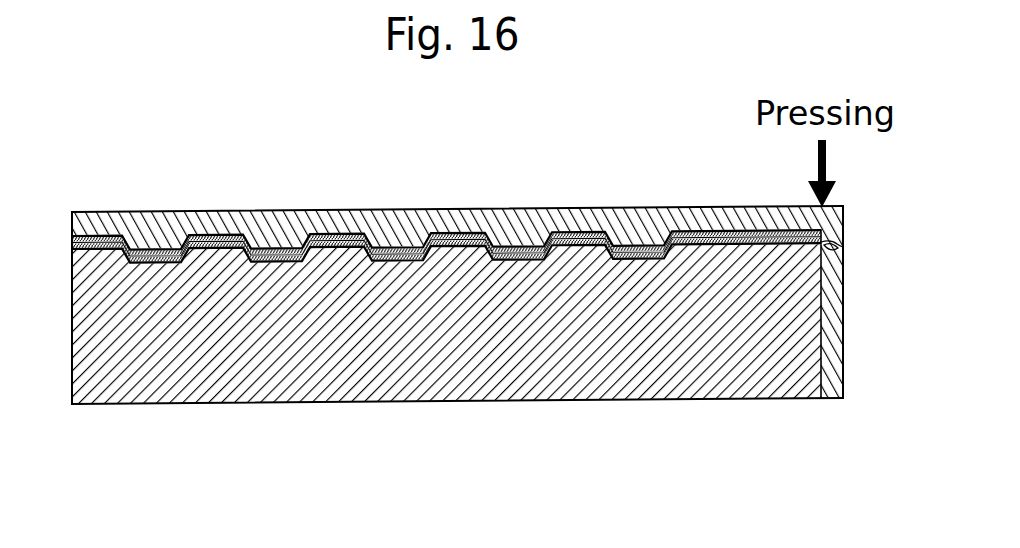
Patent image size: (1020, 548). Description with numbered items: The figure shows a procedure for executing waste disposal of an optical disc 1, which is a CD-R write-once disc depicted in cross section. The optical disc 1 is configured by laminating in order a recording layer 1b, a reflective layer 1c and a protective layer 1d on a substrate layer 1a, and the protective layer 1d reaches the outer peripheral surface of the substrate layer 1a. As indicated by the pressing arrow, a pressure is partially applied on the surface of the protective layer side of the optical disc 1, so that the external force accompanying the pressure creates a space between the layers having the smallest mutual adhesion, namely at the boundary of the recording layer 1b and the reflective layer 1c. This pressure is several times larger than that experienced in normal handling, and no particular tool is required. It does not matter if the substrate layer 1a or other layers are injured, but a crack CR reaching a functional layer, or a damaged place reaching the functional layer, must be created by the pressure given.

The optical disc 1 is at (262, 204).
The substrate layer 1a is at (457, 378).
The recording layer 1b is at (396, 243).
The reflective layer 1c is at (518, 250).
The protective layer 1d is at (639, 218).
The crack CR is at (847, 245).